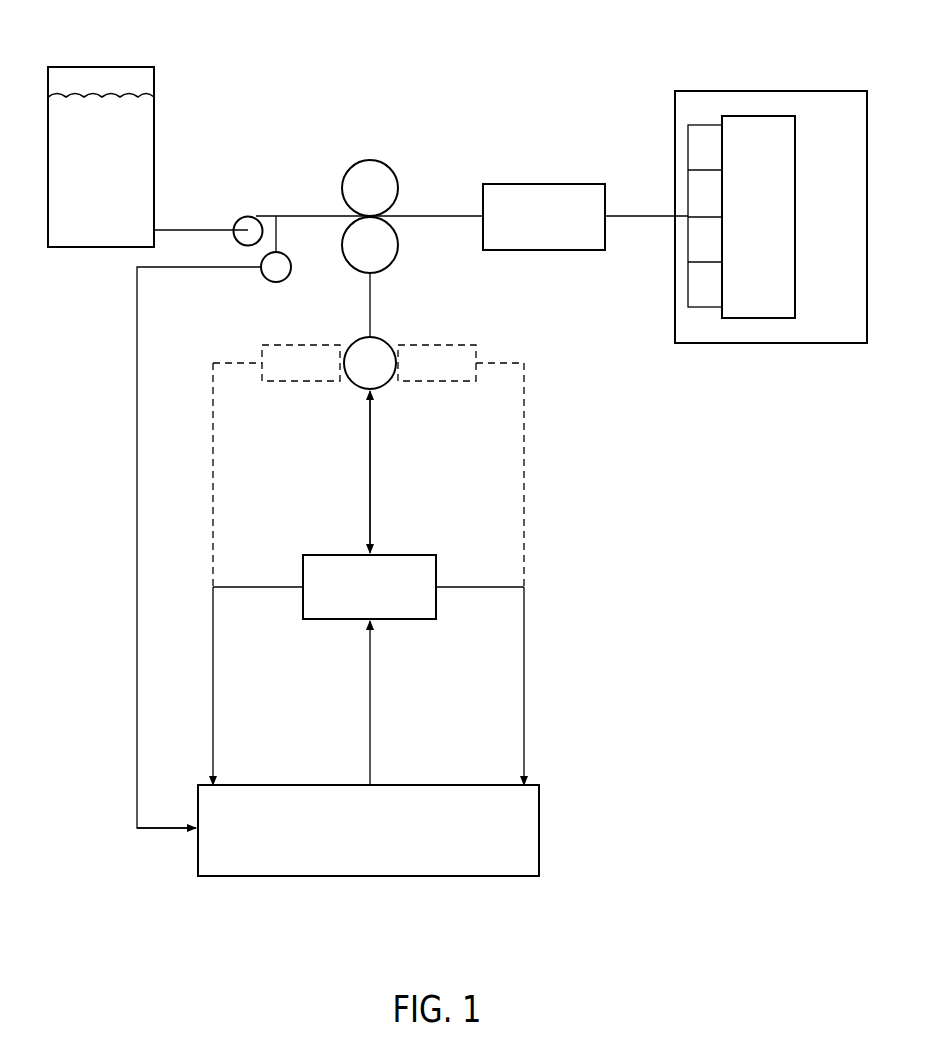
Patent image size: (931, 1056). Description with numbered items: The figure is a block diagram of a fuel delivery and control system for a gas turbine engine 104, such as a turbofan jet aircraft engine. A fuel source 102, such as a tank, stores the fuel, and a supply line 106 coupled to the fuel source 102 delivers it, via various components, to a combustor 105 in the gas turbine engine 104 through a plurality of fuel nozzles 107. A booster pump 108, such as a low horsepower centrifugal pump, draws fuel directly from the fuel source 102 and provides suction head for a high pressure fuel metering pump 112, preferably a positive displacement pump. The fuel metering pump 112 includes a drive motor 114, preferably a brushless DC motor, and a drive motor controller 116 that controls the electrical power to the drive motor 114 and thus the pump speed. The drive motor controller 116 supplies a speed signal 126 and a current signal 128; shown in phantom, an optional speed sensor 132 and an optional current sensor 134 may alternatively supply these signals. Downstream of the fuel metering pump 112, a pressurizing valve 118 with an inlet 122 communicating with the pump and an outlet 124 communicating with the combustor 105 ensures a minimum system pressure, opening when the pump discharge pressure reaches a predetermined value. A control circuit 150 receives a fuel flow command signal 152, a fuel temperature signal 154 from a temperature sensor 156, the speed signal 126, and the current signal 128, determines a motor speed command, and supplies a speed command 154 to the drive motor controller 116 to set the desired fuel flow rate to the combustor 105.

The fuel source 102 is at (93, 67).
The gas turbine engine 104 is at (793, 91).
The combustor 105 is at (783, 150).
The supply line 106 is at (198, 230).
The fuel nozzles 107 is at (708, 307).
The booster pump 108 is at (245, 217).
The fuel metering pump 112 is at (371, 160).
The drive motor 114 is at (385, 340).
The drive motor controller 116 is at (411, 555).
The pressurizing valve 118 is at (537, 182).
The inlet 122 is at (443, 216).
The outlet 124 is at (626, 216).
The speed signal 126 is at (262, 589).
The current signal 128 is at (526, 687).
The speed sensor 132 is at (297, 343).
The current sensor 134 is at (450, 343).
The control circuit 150 is at (541, 832).
The fuel flow command signal 152 is at (160, 832).
The fuel temperature signal 154 is at (372, 687).
The temperature sensor 156 is at (290, 262).